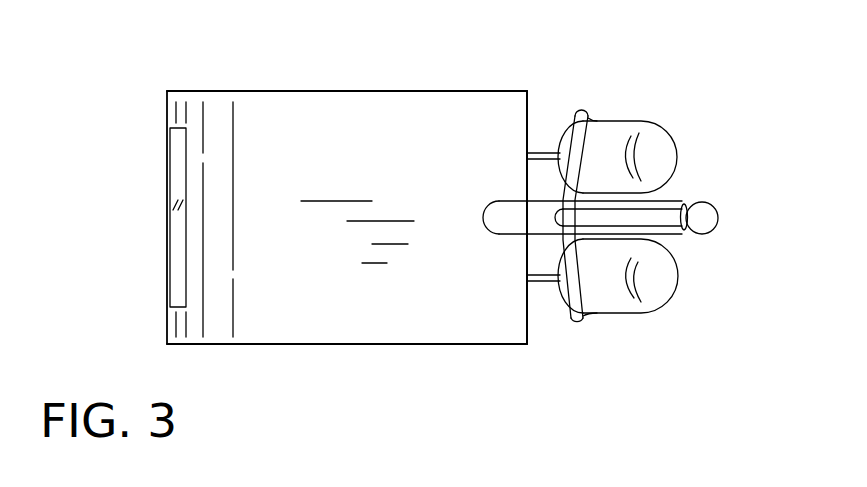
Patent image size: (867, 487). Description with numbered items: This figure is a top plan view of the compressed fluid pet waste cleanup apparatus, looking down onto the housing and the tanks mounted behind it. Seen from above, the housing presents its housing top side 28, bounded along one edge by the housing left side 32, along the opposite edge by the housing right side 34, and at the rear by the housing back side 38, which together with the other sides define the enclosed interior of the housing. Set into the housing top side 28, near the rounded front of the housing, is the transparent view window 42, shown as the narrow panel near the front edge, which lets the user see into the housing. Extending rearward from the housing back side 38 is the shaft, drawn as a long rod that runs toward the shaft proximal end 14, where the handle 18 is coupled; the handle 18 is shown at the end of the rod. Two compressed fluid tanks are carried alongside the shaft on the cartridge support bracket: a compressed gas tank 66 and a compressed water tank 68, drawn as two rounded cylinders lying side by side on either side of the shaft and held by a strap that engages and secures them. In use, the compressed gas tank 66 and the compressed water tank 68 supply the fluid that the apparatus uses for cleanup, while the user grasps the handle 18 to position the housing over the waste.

The shaft proximal end 14 is at (706, 230).
The handle 18 is at (655, 228).
The housing top side 28 is at (281, 306).
The housing left side 32 is at (346, 344).
The housing right side 34 is at (340, 91).
The housing back side 38 is at (528, 322).
The transparent view window 42 is at (177, 275).
The compressed gas tank 66 is at (615, 292).
The compressed water tank 68 is at (605, 152).